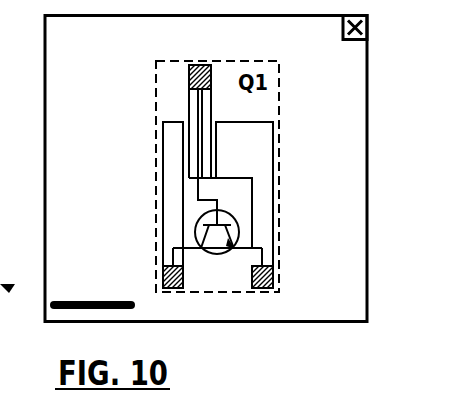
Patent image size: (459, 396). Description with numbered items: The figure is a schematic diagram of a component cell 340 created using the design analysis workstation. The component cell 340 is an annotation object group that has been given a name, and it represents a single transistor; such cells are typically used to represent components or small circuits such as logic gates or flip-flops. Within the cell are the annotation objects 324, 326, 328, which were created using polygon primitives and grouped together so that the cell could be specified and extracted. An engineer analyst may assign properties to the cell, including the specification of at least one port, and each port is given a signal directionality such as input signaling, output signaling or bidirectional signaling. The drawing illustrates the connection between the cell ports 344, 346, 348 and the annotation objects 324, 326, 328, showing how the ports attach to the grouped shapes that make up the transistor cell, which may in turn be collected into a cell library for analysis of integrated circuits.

The annotation object 324 is at (267, 168).
The annotation object 326 is at (194, 108).
The annotation object 328 is at (170, 169).
The component cell 340 is at (158, 220).
The cell port 344 is at (275, 278).
The cell port 346 is at (197, 65).
The cell port 348 is at (161, 282).